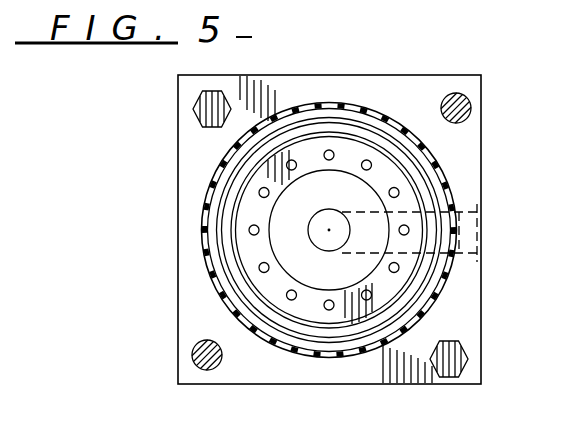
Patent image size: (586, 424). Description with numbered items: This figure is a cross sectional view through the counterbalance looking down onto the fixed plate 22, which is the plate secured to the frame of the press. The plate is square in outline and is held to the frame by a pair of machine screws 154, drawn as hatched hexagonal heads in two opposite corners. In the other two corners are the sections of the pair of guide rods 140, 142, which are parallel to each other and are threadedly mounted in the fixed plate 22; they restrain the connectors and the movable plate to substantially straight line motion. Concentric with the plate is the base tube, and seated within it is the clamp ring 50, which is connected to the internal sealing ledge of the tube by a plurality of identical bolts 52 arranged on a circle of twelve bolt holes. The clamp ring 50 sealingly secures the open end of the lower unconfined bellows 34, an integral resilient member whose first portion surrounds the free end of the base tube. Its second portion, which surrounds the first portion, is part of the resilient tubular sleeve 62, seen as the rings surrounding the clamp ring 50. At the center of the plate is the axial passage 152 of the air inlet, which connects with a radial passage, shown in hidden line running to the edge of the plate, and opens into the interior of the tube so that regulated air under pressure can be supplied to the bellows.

The fixed plate 22 is at (458, 156).
The lower unconfined bellows 34 is at (459, 195).
The clamp ring 50 is at (354, 153).
The bolts 52 is at (259, 192).
The resilient tubular sleeve 62 is at (213, 273).
The guide rod 140 is at (193, 353).
The guide rod 142 is at (471, 107).
The axial passage 152 is at (328, 234).
The machine screws 154 is at (218, 101).